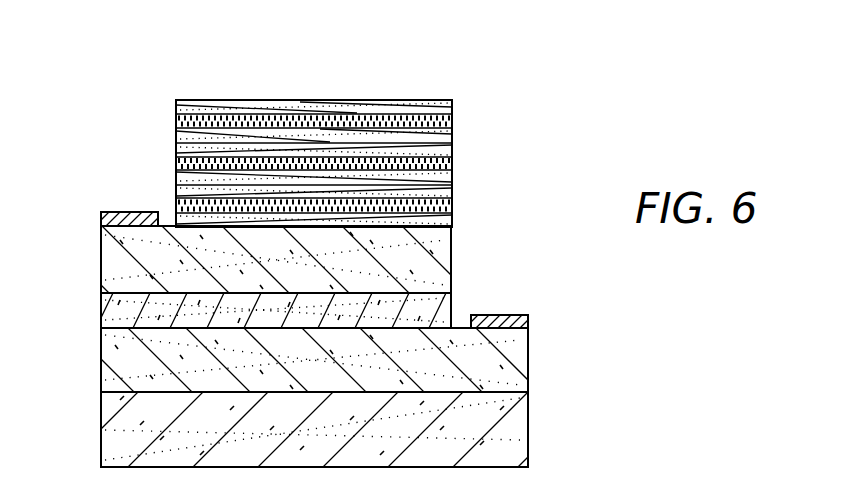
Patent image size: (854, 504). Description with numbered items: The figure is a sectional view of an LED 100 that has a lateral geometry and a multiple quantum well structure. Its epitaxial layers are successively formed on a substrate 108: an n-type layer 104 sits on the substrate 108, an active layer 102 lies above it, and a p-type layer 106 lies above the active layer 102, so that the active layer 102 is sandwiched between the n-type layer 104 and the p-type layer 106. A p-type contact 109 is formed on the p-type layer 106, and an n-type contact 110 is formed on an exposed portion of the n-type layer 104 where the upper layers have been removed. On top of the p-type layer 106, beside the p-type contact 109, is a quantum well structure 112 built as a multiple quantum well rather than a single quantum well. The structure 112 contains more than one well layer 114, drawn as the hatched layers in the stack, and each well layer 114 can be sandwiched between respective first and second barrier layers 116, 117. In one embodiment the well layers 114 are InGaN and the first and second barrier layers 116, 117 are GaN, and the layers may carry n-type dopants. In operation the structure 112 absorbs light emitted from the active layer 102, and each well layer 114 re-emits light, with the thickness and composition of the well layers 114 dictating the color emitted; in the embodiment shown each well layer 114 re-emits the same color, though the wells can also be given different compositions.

The LED 100 is at (591, 146).
The active layer 102 is at (101, 313).
The n-type layer 104 is at (101, 360).
The p-type layer 106 is at (101, 262).
The substrate 108 is at (101, 430).
The p-type contact 109 is at (130, 212).
The n-type contact 110 is at (511, 315).
The quantum well structure 112 is at (258, 86).
The well layer 114 is at (452, 120).
The first barrier layer 116 is at (176, 106).
The second barrier layer 117 is at (176, 134).